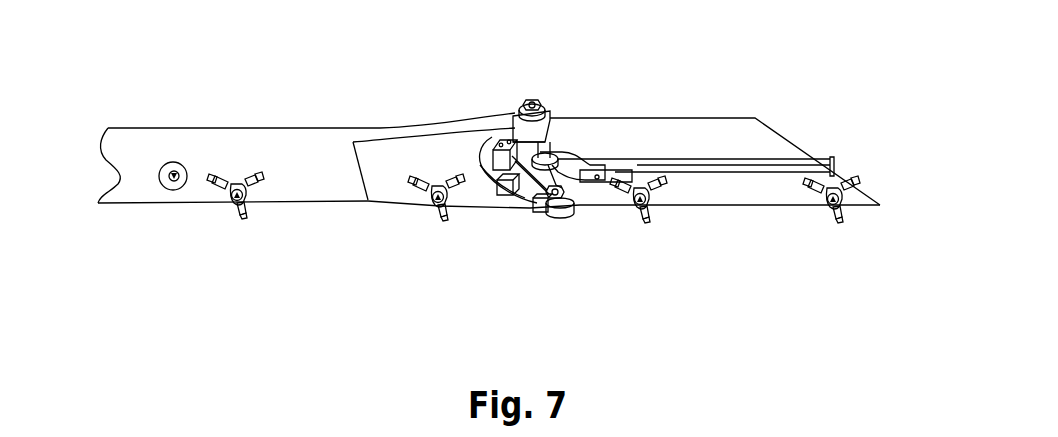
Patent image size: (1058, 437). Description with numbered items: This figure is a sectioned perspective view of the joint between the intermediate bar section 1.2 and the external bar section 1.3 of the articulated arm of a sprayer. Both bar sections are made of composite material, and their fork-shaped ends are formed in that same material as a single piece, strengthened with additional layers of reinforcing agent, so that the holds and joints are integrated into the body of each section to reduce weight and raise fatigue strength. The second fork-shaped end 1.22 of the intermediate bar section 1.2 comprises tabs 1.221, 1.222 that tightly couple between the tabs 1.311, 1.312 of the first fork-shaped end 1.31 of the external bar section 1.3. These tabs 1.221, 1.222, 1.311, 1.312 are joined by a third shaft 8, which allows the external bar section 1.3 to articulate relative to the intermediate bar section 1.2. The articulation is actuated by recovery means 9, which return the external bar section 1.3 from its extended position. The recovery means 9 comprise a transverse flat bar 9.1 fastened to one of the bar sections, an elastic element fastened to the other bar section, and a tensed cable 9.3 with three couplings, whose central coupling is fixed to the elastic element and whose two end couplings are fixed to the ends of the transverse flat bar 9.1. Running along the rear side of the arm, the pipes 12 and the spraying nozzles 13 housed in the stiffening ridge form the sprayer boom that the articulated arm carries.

The intermediate bar section 1.2 is at (752, 138).
The external bar section 1.3 is at (267, 147).
The first fork-shaped end 1.31 is at (467, 152).
The tab 1.311 is at (532, 100).
The tab 1.312 is at (538, 212).
The second fork-shaped end 1.22 is at (542, 148).
The tab 1.221 is at (528, 137).
The tab 1.222 is at (537, 205).
The third shaft 8 is at (543, 160).
The recovery means 9 is at (577, 196).
The transverse flat bar 9.1 is at (567, 167).
The tensed cable 9.3 is at (535, 183).
The pipes 12 is at (723, 168).
The spraying nozzles 13 is at (438, 195).